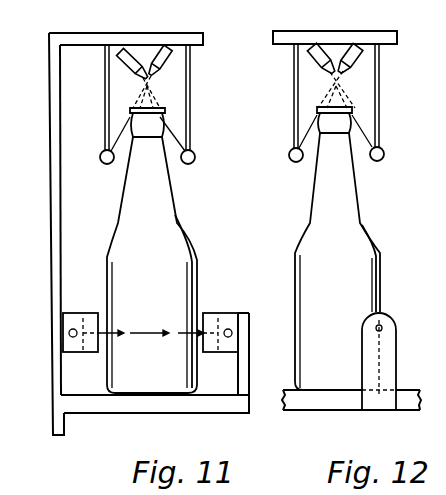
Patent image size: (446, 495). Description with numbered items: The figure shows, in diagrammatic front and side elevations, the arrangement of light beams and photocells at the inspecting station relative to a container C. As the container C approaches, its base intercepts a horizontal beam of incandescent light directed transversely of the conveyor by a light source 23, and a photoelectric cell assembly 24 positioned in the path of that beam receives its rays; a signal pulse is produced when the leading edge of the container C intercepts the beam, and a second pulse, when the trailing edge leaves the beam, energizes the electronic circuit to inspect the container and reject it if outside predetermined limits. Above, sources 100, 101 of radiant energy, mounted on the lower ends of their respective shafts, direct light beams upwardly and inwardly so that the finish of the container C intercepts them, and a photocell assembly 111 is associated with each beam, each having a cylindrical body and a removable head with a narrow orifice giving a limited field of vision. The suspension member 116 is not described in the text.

In FIG. 11, the photocell assembly 111 is at (122, 63).
In FIG. 12, the photocell assembly 111 is at (333, 68).
In FIG. 11, the suspension rod 116 is at (192, 96).
In FIG. 11, the source of radiant energy 100 is at (106, 166).
In FIG. 11, the source of radiant energy 101 is at (189, 165).
In FIG. 11, the container C is at (180, 250).
In FIG. 12, the container C is at (373, 242).
In FIG. 11, the light source 23 is at (83, 314).
In FIG. 12, the light source 23 is at (391, 320).
In FIG. 11, the photoelectric cell assembly 24 is at (227, 313).